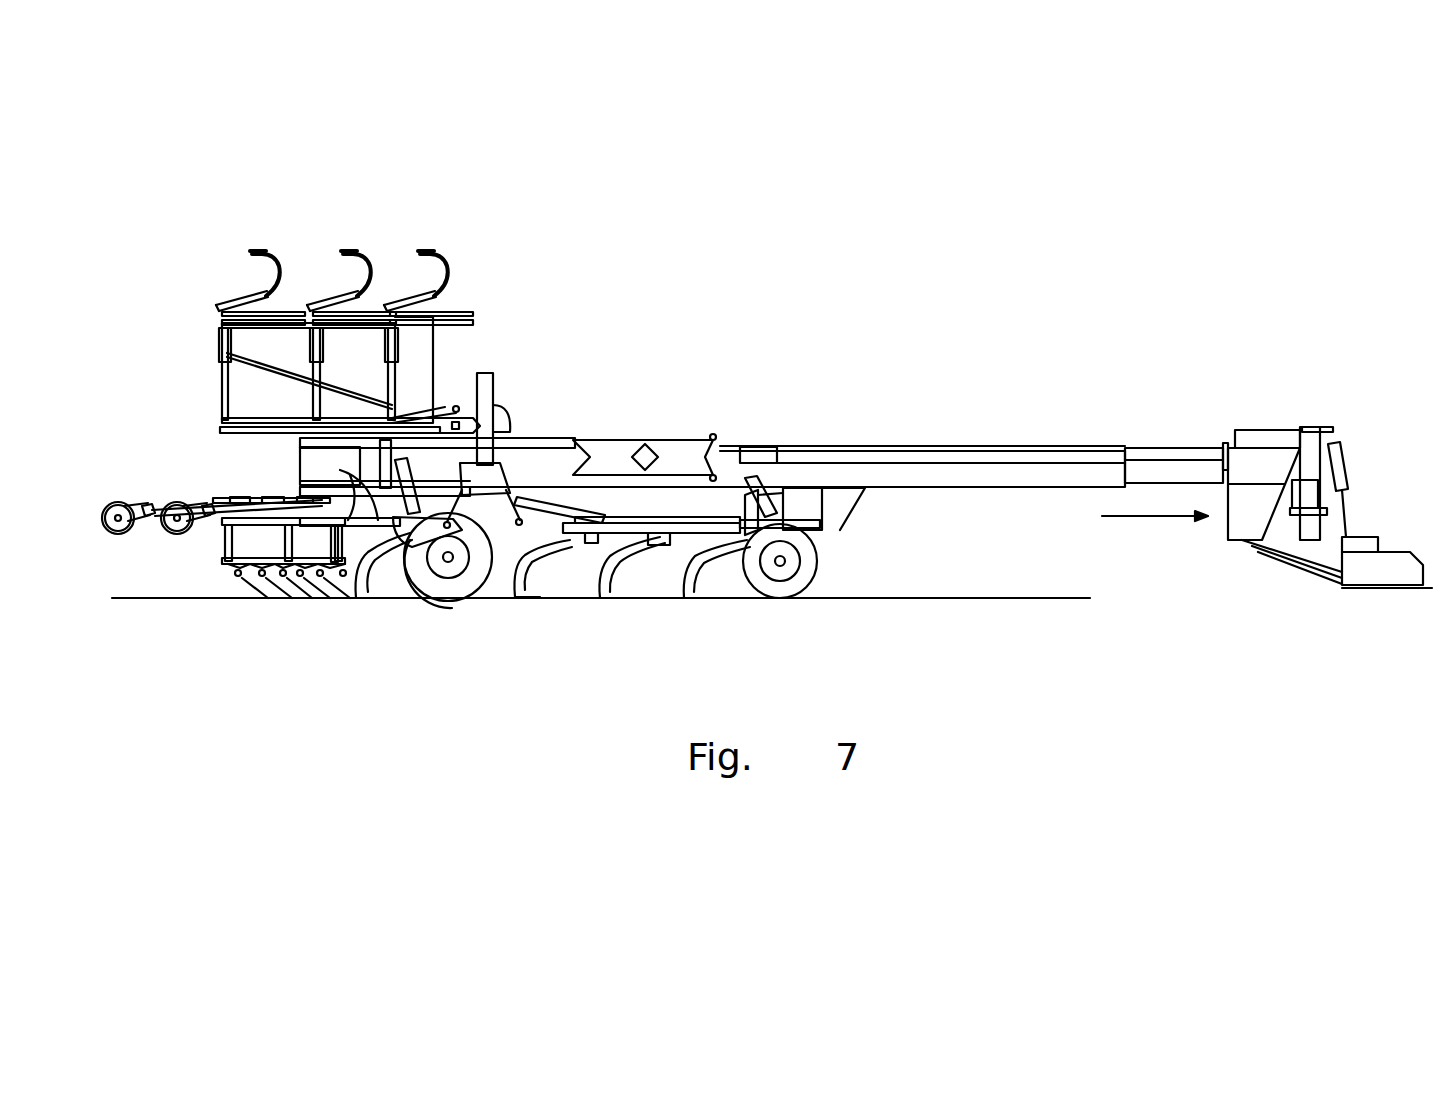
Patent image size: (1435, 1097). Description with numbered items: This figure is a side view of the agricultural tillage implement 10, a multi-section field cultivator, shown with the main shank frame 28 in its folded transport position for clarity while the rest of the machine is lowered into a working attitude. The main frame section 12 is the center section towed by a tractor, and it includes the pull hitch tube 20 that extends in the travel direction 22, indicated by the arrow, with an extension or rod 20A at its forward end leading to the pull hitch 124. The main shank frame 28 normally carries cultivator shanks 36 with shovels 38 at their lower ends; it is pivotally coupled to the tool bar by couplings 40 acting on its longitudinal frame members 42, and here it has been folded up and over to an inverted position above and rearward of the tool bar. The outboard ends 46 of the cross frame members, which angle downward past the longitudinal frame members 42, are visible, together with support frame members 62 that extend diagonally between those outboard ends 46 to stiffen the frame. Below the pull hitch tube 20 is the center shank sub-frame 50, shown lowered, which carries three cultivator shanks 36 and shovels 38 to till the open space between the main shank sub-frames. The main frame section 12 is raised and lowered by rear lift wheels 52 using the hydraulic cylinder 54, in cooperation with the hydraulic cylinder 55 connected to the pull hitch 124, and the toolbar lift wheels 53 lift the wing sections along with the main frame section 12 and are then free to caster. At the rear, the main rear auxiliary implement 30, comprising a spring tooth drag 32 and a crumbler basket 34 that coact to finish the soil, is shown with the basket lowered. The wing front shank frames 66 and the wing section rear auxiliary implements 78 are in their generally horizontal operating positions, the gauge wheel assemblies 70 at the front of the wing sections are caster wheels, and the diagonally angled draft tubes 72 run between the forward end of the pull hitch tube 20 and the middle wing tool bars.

The agricultural tillage implement 10 is at (935, 343).
The main frame section 12 is at (810, 446).
The pull hitch tube 20 is at (968, 488).
The tongue extension 20A is at (1168, 447).
The travel direction 22 is at (1150, 518).
The main shank frame 28 is at (460, 306).
The main rear auxiliary implement 30 is at (132, 553).
The spring tooth drag 32 is at (318, 600).
The rolling (crumbler) basket 34 is at (174, 503).
The cultivator shanks 36 is at (612, 578).
The shovels 38 is at (619, 600).
The couplings 40 is at (445, 415).
The longitudinal frame members 42 is at (263, 432).
The outboard ends 46 is at (220, 388).
The center shank sub-frame 50 is at (678, 503).
The rear lift wheels 52 is at (385, 600).
The toolbar lift wheels 53 is at (452, 592).
The hydraulic cylinder 54 is at (493, 402).
The hydraulic cylinder 55 is at (1342, 467).
The support frame members 62 is at (292, 378).
The wing front shank frames 66 is at (700, 535).
The gauge wheel assemblies 70 is at (815, 565).
The draft tubes 72 is at (1058, 453).
The wing section rear auxiliary implements 78 is at (195, 553).
The pull hitch 124 is at (1387, 570).